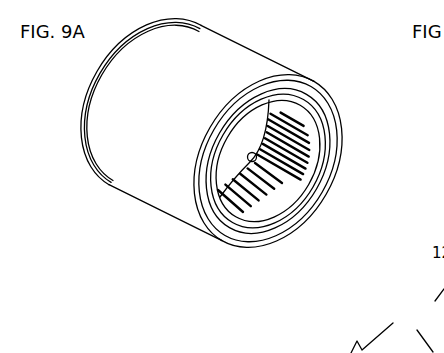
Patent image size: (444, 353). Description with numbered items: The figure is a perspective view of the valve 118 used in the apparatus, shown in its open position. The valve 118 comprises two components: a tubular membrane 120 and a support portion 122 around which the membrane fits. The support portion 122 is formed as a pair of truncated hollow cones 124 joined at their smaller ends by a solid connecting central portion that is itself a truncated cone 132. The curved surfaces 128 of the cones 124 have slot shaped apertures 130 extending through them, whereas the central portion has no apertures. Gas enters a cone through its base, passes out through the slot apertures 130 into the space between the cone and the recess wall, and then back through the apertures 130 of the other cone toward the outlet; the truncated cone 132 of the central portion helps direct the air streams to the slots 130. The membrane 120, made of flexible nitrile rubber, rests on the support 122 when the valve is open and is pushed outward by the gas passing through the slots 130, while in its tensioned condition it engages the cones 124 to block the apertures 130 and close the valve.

The valve 118 is at (339, 255).
The tubular membrane 120 is at (132, 168).
The support portion 122 is at (290, 171).
The truncated hollow cones 124 is at (308, 152).
The curved surfaces 128 is at (255, 217).
The slot shaped apertures 130 is at (272, 190).
The truncated cone 132 is at (245, 153).